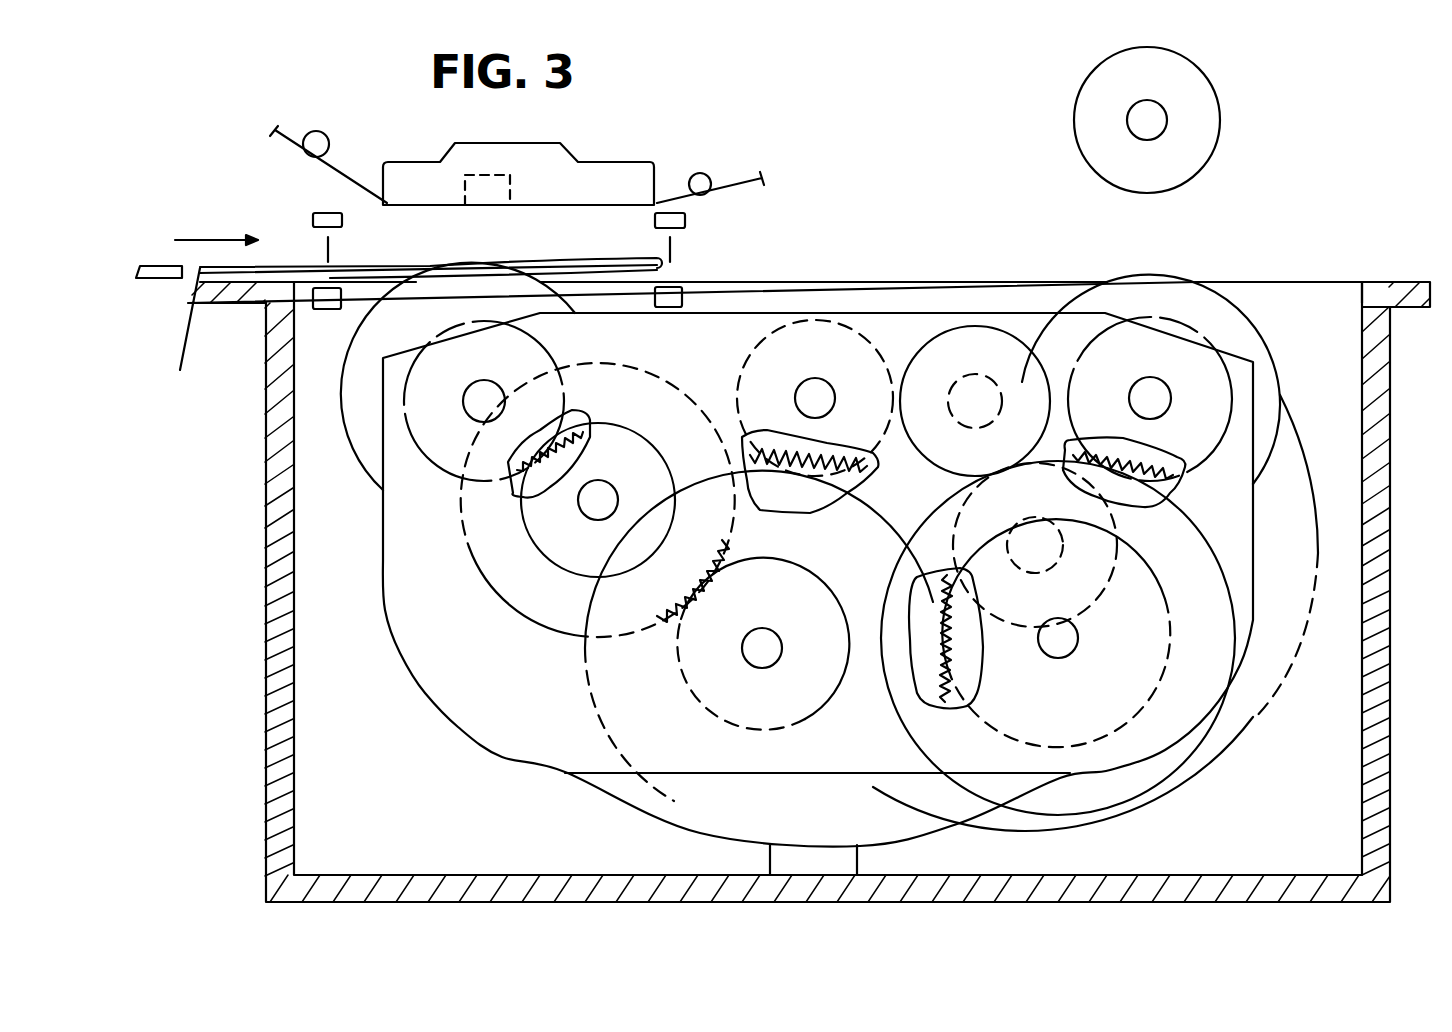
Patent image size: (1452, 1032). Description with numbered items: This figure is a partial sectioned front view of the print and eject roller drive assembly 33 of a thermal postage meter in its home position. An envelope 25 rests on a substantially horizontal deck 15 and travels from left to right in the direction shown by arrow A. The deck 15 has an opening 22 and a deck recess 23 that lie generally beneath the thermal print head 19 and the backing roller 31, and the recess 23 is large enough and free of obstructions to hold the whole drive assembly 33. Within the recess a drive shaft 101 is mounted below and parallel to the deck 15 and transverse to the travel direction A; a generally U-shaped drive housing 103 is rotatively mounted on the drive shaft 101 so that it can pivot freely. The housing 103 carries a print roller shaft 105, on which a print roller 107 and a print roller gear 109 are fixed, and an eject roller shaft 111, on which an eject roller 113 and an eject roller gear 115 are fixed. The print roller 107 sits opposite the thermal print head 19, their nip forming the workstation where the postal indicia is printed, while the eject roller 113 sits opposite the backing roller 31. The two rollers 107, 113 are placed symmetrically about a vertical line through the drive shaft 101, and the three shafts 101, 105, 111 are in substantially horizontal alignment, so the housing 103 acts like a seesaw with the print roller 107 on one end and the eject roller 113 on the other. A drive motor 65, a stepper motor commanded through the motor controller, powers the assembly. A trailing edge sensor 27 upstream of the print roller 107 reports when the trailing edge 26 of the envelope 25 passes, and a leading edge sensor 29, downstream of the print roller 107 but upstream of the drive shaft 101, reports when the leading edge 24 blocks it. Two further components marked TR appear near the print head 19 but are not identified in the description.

The deck 15 is at (1390, 283).
The thermal print head 19 is at (583, 163).
The opening 22 is at (302, 283).
The deck recess 23 is at (1284, 305).
The leading edge 24 is at (658, 257).
The envelope 25 is at (442, 260).
The trailing edge 26 is at (133, 279).
The trailing edge sensor 27 is at (323, 210).
The leading edge sensor 29 is at (670, 203).
The backing roller 31 is at (1217, 90).
The print and eject roller drive assembly 33 is at (392, 717).
The drive motor 65 is at (1313, 586).
The drive shaft 101 is at (835, 380).
The drive housing 103 is at (1253, 510).
The print roller shaft 105 is at (545, 375).
The print roller 107 is at (360, 467).
The print roller gear 109 is at (467, 415).
The eject roller shaft 111 is at (1160, 378).
The eject roller 113 is at (1152, 275).
The eject roller gear 115 is at (1200, 333).
The transport roller TR is at (337, 167).
The arrow A is at (192, 233).